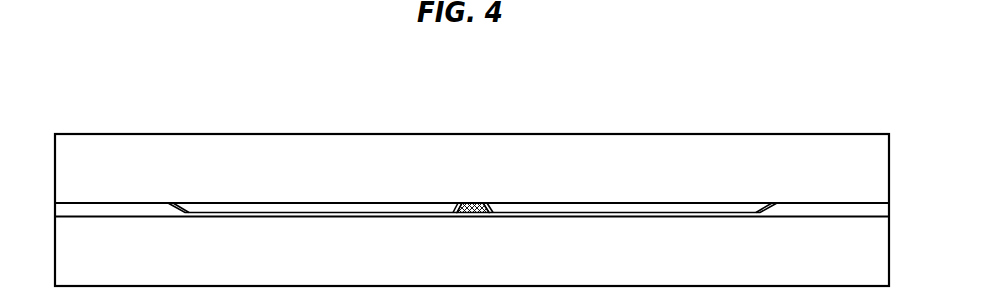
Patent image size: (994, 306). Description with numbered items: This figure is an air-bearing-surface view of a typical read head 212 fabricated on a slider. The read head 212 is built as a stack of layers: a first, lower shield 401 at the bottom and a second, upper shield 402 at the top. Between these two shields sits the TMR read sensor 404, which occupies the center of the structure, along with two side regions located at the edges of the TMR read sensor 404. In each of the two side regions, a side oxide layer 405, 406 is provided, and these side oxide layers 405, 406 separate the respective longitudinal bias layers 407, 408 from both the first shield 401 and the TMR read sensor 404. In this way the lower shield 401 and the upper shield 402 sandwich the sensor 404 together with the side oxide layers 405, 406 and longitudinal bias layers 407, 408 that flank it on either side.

The read head 212 is at (605, 76).
The first (lower) shield 401 is at (492, 268).
The second (upper) shield 402 is at (492, 170).
The TMR read sensor 404 is at (478, 204).
The side oxide layer 405 is at (307, 213).
The side oxide layer 406 is at (617, 213).
The longitudinal bias layer 407 is at (269, 208).
The longitudinal bias layer 408 is at (670, 208).